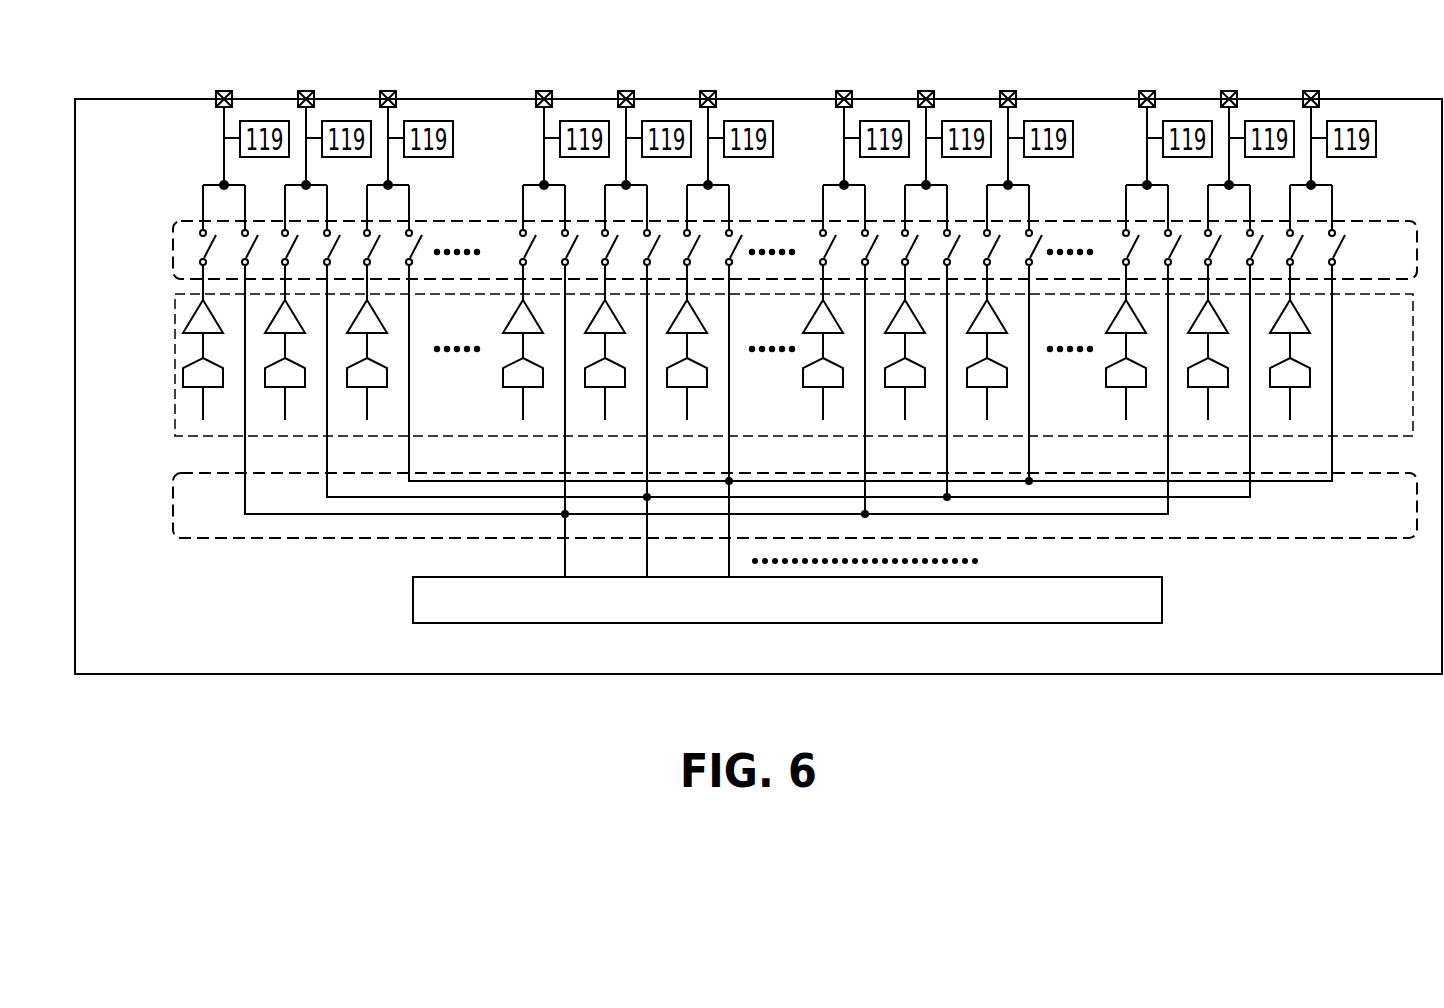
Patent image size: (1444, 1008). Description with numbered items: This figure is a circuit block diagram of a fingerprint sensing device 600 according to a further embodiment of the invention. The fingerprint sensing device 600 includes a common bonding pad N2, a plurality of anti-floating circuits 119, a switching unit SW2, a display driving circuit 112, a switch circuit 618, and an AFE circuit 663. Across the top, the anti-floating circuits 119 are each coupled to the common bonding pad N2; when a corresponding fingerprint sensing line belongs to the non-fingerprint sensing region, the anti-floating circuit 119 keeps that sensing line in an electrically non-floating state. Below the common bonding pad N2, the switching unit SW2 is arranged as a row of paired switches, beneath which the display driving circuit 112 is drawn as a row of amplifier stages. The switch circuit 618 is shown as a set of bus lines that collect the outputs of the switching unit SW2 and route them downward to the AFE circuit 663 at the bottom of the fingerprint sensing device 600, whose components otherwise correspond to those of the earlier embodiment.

The fingerprint sensing device 600 is at (1335, 674).
The common bonding pad N2 is at (222, 90).
The anti-floating circuit 119 is at (800, 139).
The switching unit SW2 is at (173, 238).
The display driving circuit 112 is at (175, 368).
The switch circuit 618 is at (173, 500).
The AFE circuit 663 is at (1162, 598).